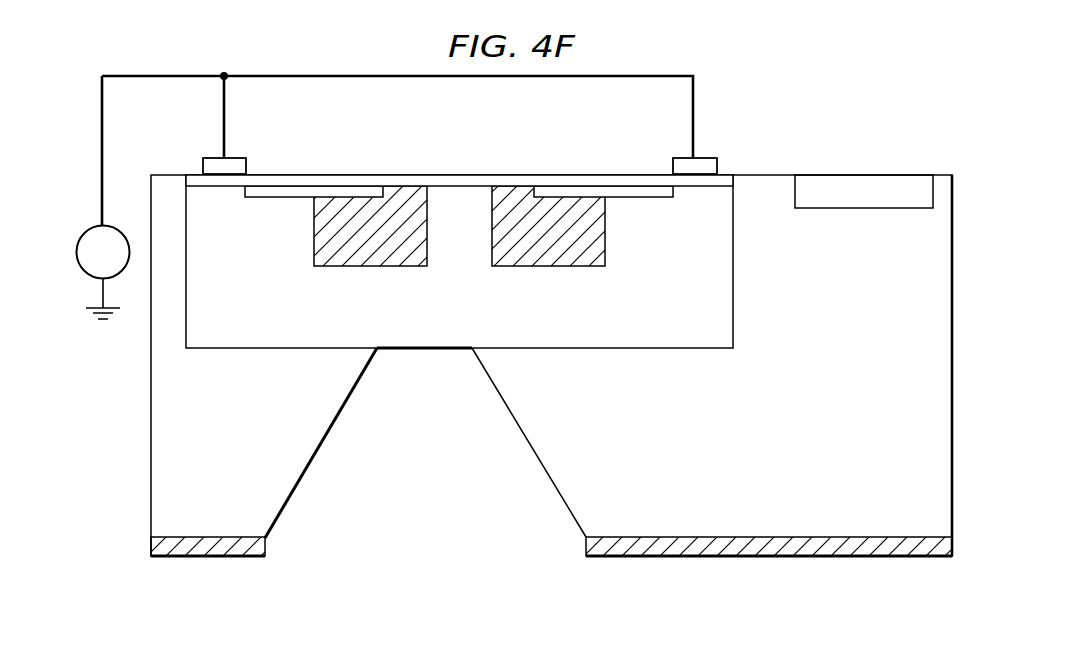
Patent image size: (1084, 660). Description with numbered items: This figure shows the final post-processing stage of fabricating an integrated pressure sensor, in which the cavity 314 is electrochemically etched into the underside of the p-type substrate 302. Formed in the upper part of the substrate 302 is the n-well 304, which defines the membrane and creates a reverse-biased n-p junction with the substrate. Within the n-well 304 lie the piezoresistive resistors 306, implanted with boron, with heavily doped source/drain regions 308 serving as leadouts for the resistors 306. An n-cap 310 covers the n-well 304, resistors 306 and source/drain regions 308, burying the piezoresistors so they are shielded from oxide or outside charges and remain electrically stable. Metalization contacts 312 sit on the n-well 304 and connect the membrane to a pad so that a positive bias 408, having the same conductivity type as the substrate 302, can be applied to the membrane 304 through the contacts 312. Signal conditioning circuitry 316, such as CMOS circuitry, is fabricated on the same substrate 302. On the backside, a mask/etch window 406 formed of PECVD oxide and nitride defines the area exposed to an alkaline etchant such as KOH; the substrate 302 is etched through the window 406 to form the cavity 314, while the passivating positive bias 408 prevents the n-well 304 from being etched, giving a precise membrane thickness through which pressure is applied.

The substrate 302 is at (885, 518).
The n-well 304 is at (682, 323).
The piezoresistive resistors 306 is at (498, 220).
The source/drain regions 308 is at (356, 192).
The n-cap 310 is at (297, 182).
The metalization contacts 312 is at (230, 165).
The cavity 314 is at (419, 428).
The signal conditioning circuitry 316 is at (908, 185).
The mask/etch window 406 is at (207, 547).
The positive bias 408 is at (120, 231).